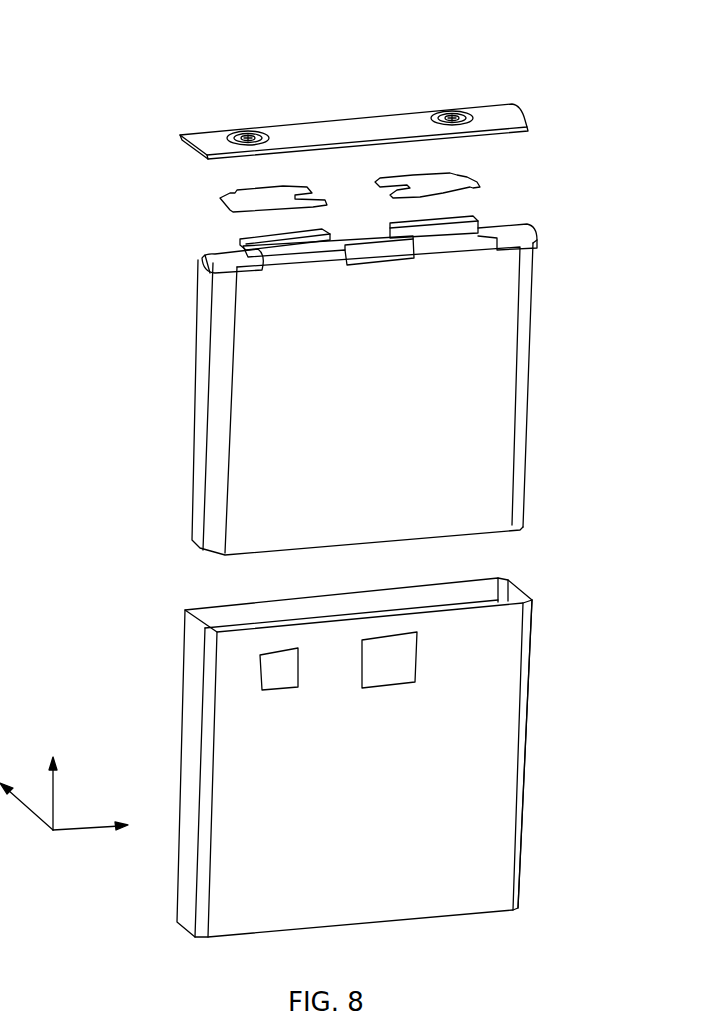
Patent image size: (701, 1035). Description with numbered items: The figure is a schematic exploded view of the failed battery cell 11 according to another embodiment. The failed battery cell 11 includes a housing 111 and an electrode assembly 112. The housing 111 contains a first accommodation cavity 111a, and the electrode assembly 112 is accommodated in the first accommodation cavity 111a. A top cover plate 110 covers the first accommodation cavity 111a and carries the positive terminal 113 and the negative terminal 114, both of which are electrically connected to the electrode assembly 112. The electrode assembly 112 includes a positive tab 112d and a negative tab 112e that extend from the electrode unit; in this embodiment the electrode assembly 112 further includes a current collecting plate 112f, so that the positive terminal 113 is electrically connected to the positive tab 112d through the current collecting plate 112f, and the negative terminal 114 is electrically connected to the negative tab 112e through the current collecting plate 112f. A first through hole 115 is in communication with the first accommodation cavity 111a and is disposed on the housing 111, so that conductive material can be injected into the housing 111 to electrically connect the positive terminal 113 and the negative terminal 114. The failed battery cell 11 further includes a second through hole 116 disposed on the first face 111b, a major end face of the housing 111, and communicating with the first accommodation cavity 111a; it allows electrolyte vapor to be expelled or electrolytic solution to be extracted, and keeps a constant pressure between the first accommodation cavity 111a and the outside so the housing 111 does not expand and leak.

The failed battery cell 11 is at (368, 40).
The top cover plate 110 is at (513, 117).
The positive terminal 113 is at (452, 111).
The negative terminal 114 is at (248, 130).
The current collecting plate 112f is at (230, 197).
The positive tab 112d is at (486, 226).
The negative tab 112e is at (240, 241).
The electrode assembly 112 is at (365, 384).
The housing 111 is at (421, 750).
The first accommodation cavity 111a is at (478, 596).
The first face 111b is at (503, 766).
The first through hole 115 is at (382, 680).
The second through hole 116 is at (277, 682).